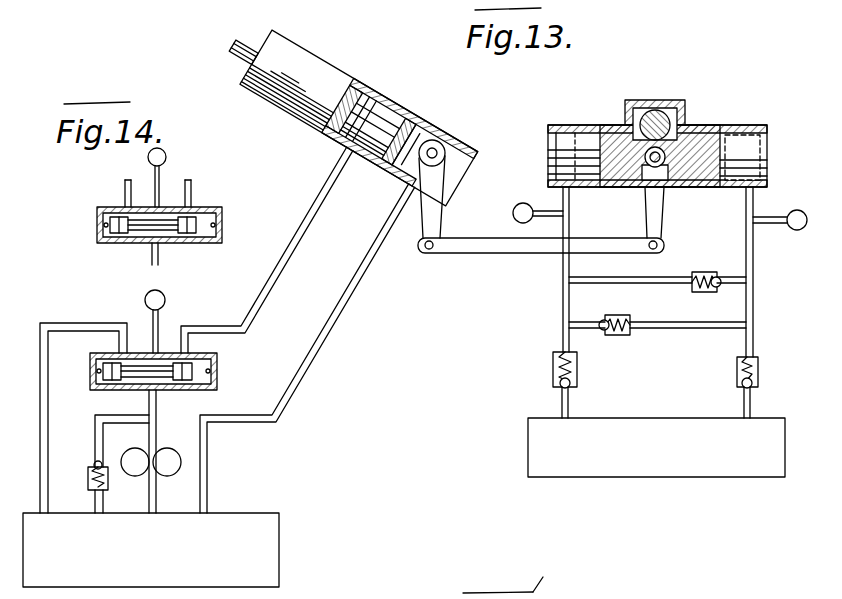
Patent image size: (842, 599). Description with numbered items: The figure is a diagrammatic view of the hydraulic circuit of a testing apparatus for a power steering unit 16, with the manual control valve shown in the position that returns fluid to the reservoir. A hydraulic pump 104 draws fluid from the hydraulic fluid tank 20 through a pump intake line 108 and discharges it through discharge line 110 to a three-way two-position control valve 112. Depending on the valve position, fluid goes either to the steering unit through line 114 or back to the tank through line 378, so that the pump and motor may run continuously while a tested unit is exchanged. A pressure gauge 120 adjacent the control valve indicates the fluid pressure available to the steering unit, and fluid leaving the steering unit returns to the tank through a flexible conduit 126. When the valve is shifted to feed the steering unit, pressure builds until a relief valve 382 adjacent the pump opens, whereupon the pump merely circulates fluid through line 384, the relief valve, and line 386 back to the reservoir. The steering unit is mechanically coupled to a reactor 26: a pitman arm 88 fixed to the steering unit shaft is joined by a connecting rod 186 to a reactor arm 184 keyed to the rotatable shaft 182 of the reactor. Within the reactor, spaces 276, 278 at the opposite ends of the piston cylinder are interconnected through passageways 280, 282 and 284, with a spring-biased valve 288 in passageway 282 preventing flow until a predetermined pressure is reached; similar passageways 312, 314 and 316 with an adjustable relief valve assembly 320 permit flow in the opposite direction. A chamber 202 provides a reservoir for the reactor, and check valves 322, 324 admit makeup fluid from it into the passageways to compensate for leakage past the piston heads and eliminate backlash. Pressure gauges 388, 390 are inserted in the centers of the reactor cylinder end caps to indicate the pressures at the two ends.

In FIG. 14, the power steering unit 16 is at (345, 68).
In FIG. 14, the hydraulic fluid tank 20 is at (280, 555).
In FIG. 13, the reactor 26 is at (732, 122).
In FIG. 13, the pitman arm 88 is at (436, 222).
In FIG. 14, the hydraulic pump 104 is at (179, 461).
In FIG. 14, the pump intake line 108 is at (158, 497).
In FIG. 14, the discharge line 110 is at (159, 261).
In FIG. 14, the control valve 112 is at (166, 352).
In FIG. 14, the line 114 is at (191, 191).
In FIG. 14, the pressure gauge 120 is at (166, 158).
In FIG. 14, the flexible conduit 126 is at (333, 320).
In FIG. 13, the rotatable shaft 182 is at (660, 114).
In FIG. 13, the reactor arm 184 is at (666, 212).
In FIG. 13, the connecting rod 186 is at (488, 249).
In FIG. 13, the chamber 202 is at (537, 444).
In FIG. 13, the space 276 is at (563, 145).
In FIG. 13, the space 278 is at (768, 133).
In FIG. 13, the passageway 280 is at (563, 306).
In FIG. 13, the passageway 282 is at (690, 329).
In FIG. 13, the passageway 284 is at (757, 305).
In FIG. 13, the valve 288 is at (621, 337).
In FIG. 13, the passageway 312 is at (754, 250).
In FIG. 13, the passageway 314 is at (607, 282).
In FIG. 13, the passageway 316 is at (570, 226).
In FIG. 13, the relief valve assembly 320 is at (707, 288).
In FIG. 13, the check valve 322 is at (578, 377).
In FIG. 13, the check valve 324 is at (759, 371).
In FIG. 14, the line 378 is at (124, 193).
In FIG. 14, the relief valve 382 is at (91, 468).
In FIG. 14, the line 384 is at (114, 413).
In FIG. 14, the line 386 is at (94, 496).
In FIG. 13, the pressure gauge 388 is at (524, 203).
In FIG. 13, the pressure gauge 390 is at (799, 210).